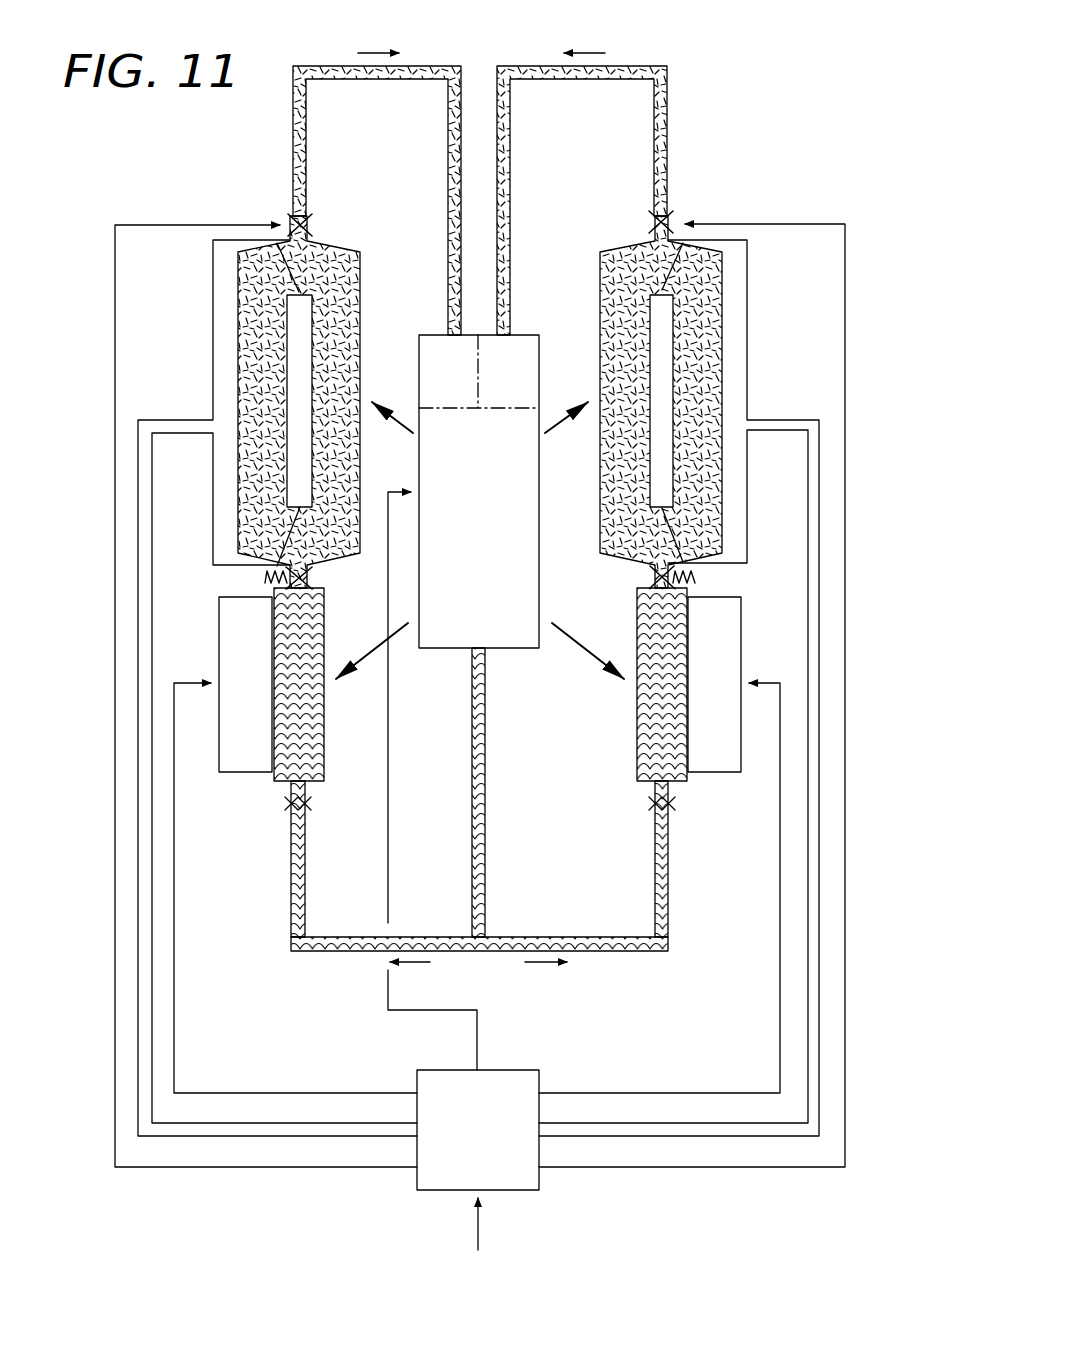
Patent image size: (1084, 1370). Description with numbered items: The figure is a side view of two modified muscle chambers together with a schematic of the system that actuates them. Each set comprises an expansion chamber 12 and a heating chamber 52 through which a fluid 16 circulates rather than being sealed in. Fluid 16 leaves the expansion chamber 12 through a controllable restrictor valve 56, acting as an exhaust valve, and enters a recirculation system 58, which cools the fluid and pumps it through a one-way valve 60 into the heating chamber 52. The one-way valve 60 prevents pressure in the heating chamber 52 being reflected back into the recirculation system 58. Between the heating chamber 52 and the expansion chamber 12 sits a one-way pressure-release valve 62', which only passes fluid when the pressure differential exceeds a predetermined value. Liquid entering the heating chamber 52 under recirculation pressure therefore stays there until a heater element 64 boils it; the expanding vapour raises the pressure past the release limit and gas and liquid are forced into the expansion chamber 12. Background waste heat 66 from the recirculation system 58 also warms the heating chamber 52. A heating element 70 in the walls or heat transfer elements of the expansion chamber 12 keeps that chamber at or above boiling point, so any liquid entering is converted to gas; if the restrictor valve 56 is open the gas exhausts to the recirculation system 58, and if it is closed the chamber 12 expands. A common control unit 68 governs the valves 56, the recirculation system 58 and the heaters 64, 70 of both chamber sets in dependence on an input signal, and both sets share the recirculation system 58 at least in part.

The expansion chamber 12 is at (621, 402).
The fluid 16 is at (636, 278).
The heating chamber 52 is at (634, 738).
The controllable restrictor valve 56 is at (641, 222).
The recirculation system 58 is at (468, 623).
The one-way valve 60 is at (647, 815).
The one-way pressure-release valve 62' is at (620, 564).
The heater element 64 is at (722, 747).
The waste heat 66 is at (583, 658).
The control unit 68 is at (884, 495).
The heating element 70 is at (661, 360).